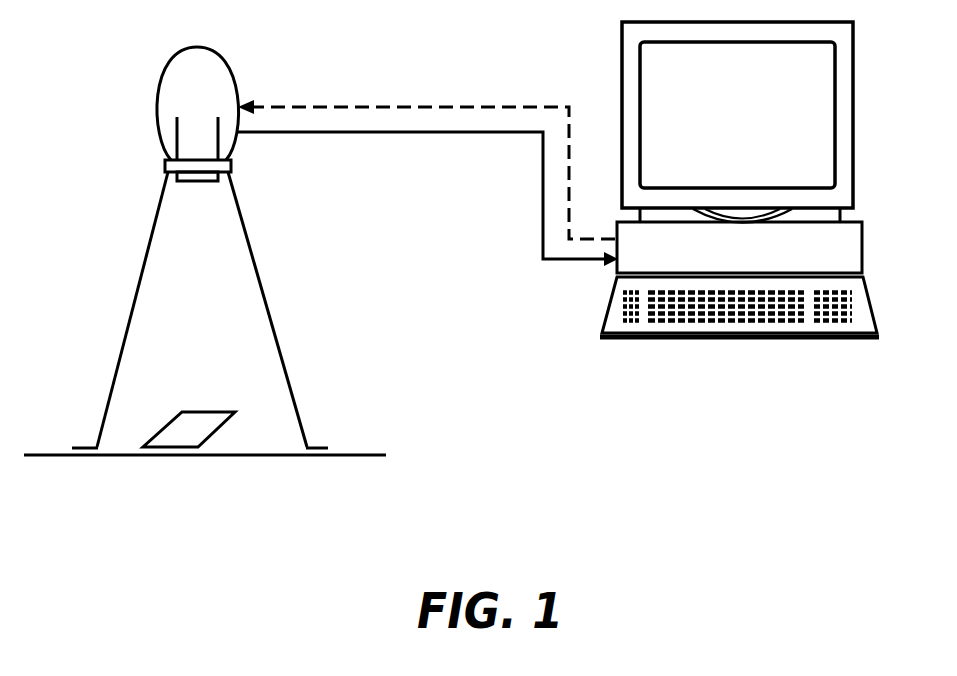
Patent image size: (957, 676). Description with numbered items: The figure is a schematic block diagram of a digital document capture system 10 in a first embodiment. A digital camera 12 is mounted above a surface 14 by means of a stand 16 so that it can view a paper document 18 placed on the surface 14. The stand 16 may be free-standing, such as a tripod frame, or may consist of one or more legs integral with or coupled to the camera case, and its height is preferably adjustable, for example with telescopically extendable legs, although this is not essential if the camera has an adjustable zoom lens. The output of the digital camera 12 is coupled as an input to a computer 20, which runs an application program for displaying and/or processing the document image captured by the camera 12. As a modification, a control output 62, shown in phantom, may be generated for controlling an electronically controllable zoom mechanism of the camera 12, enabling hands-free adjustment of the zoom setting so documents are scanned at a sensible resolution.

The digital document capture system 10 is at (527, 384).
The digital camera 12 is at (178, 83).
The surface 14 is at (355, 450).
The stand 16 is at (265, 291).
The paper document 18 is at (198, 418).
The computer 20 is at (862, 248).
The control output 62 is at (408, 107).